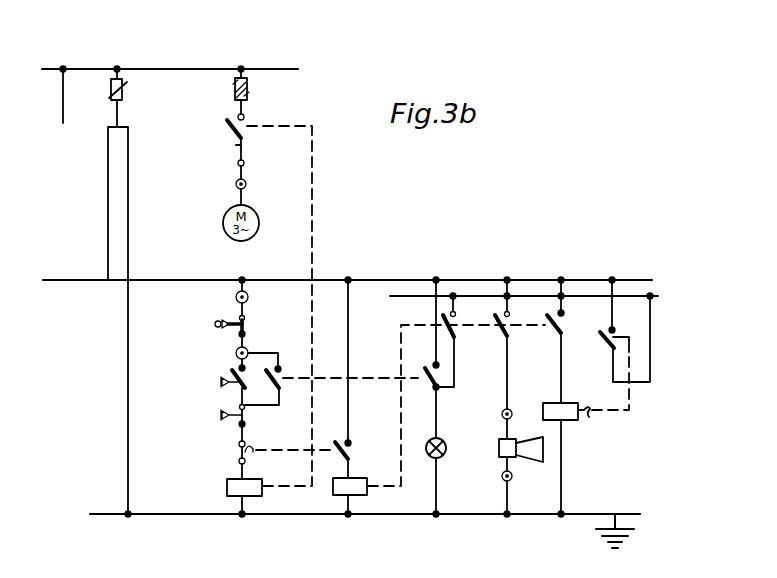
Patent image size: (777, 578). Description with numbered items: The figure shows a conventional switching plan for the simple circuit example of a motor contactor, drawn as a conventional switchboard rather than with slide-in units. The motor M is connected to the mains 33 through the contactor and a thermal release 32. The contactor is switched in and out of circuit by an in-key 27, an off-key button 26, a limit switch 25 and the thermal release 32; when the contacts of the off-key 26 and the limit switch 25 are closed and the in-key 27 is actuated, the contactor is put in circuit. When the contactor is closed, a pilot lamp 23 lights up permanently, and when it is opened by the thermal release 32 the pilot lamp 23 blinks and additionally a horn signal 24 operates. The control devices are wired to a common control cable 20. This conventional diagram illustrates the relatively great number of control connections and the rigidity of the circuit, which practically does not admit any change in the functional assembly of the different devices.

The mains 33 is at (270, 69).
The thermal release 32 is at (236, 147).
The limit switch 25 is at (215, 324).
The in-key 27 is at (221, 382).
The off-key button 26 is at (221, 415).
The common control cable 20 is at (415, 276).
The pilot lamp 23 is at (445, 451).
The horn signal 24 is at (513, 453).